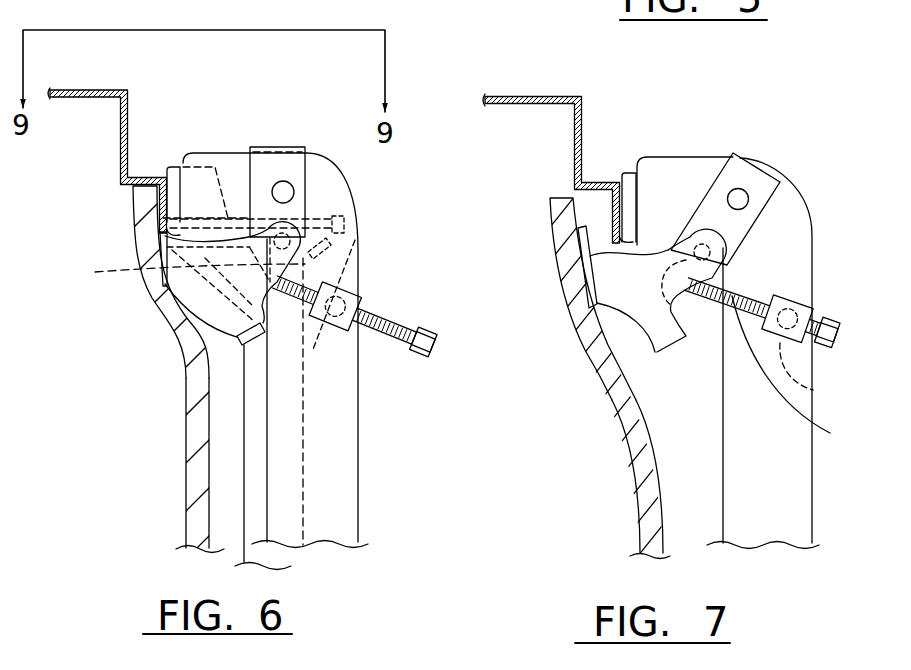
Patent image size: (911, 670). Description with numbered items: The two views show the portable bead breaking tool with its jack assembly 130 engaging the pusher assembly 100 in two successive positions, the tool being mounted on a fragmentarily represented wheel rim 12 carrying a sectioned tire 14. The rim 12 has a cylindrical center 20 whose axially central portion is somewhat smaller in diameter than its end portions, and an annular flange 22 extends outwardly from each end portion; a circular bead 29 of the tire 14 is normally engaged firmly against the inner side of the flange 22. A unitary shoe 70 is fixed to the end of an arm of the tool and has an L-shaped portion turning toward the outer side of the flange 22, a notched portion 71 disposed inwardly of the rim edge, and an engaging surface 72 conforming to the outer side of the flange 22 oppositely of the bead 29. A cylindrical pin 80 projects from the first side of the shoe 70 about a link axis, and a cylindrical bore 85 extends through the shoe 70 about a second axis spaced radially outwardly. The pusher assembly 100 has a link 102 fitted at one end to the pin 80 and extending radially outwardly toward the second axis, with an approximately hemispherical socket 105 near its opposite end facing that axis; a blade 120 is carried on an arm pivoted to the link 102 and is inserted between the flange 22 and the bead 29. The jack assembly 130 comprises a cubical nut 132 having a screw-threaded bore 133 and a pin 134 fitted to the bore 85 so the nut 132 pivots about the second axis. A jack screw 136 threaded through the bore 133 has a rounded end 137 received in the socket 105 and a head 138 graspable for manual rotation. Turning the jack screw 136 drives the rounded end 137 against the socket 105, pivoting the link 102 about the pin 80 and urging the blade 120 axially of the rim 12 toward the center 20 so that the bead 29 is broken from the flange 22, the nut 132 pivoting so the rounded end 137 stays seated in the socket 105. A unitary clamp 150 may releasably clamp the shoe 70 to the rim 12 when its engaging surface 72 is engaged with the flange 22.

In FIG. 6, the wheel rim 12 is at (80, 90).
In FIG. 7, the wheel rim 12 is at (511, 96).
In FIG. 6, the tire 14 is at (184, 472).
In FIG. 7, the tire 14 is at (636, 522).
In FIG. 7, the center 20 is at (528, 104).
In FIG. 7, the annular flange 22 is at (577, 152).
In FIG. 6, the bead 29 is at (138, 202).
In FIG. 7, the bead 29 is at (558, 210).
In FIG. 6, the shoe 70 is at (350, 181).
In FIG. 7, the shoe 70 is at (790, 165).
In FIG. 6, the portion 71 is at (175, 197).
In FIG. 7, the portion 71 is at (628, 187).
In FIG. 6, the engaging surface 72 is at (163, 178).
In FIG. 7, the engaging surface 72 is at (620, 183).
In FIG. 6, the cylindrical pin 80 is at (284, 181).
In FIG. 7, the cylindrical pin 80 is at (739, 188).
In FIG. 6, the cylindrical bore 85 is at (356, 235).
In FIG. 6, the pusher assembly 100 is at (258, 346).
In FIG. 7, the pusher assembly 100 is at (655, 368).
In FIG. 6, the link 102 is at (268, 145).
In FIG. 7, the link 102 is at (765, 217).
In FIG. 6, the hemispherical socket 105 is at (56, 265).
In FIG. 6, the blade 120 is at (160, 234).
In FIG. 7, the blade 120 is at (577, 247).
In FIG. 6, the jack assembly 130 is at (375, 294).
In FIG. 7, the jack assembly 130 is at (802, 290).
In FIG. 7, the nut 132 is at (785, 336).
In FIG. 7, the screw-threaded bore 133 is at (815, 310).
In FIG. 7, the pin 134 is at (813, 390).
In FIG. 6, the jack screw 136 is at (371, 345).
In FIG. 7, the jack screw 136 is at (842, 425).
In FIG. 6, the rounded end 137 is at (238, 338).
In FIG. 7, the rounded end 137 is at (691, 290).
In FIG. 6, the head 138 is at (430, 336).
In FIG. 6, the clamp 150 is at (306, 478).